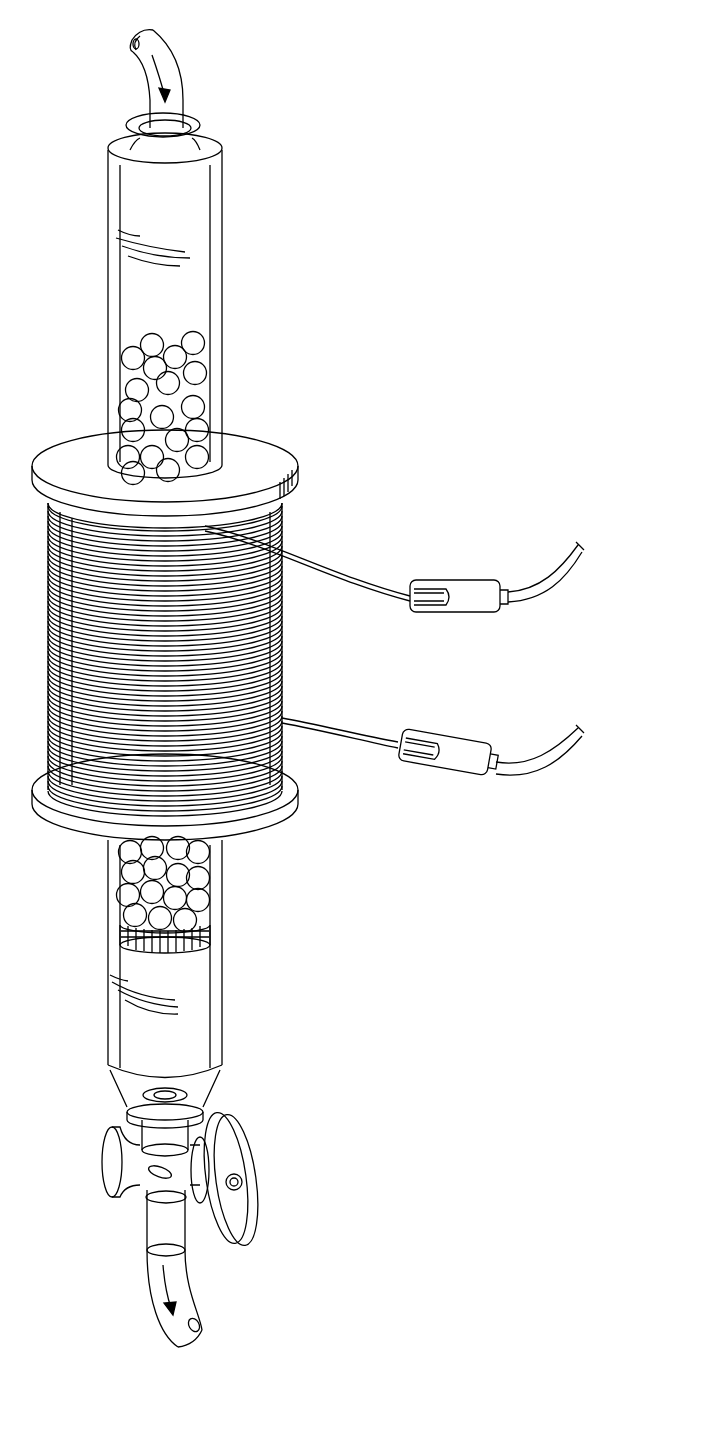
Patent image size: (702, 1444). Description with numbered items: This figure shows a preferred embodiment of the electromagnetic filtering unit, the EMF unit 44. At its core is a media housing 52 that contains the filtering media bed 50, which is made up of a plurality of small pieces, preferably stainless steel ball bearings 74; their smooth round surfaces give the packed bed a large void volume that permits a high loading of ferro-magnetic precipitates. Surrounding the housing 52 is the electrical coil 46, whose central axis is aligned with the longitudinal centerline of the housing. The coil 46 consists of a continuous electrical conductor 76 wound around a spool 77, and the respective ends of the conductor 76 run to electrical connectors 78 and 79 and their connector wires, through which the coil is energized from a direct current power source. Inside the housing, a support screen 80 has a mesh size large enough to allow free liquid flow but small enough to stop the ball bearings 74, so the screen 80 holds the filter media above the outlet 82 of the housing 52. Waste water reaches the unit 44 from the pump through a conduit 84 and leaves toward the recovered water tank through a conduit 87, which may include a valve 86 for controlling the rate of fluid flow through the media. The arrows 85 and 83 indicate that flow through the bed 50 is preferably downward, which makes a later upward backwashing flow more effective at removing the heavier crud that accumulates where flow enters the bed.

The EMF unit 44 is at (392, 272).
The media housing 52 is at (225, 197).
The conduit 84 is at (180, 91).
The arrow 85 is at (168, 63).
The filtering media bed 50 is at (176, 333).
The stainless steel ball bearings 74 is at (200, 343).
The spool 77 is at (256, 442).
The electrical coil 46 is at (250, 618).
The electrical conductor 76 is at (322, 566).
The electrical connector 78 is at (424, 578).
The electrical connector 79 is at (412, 728).
The support screen 80 is at (183, 950).
The outlet 82 is at (207, 1093).
The valve 86 is at (252, 1158).
The conduit 87 is at (142, 1266).
The arrow 83 is at (167, 1278).